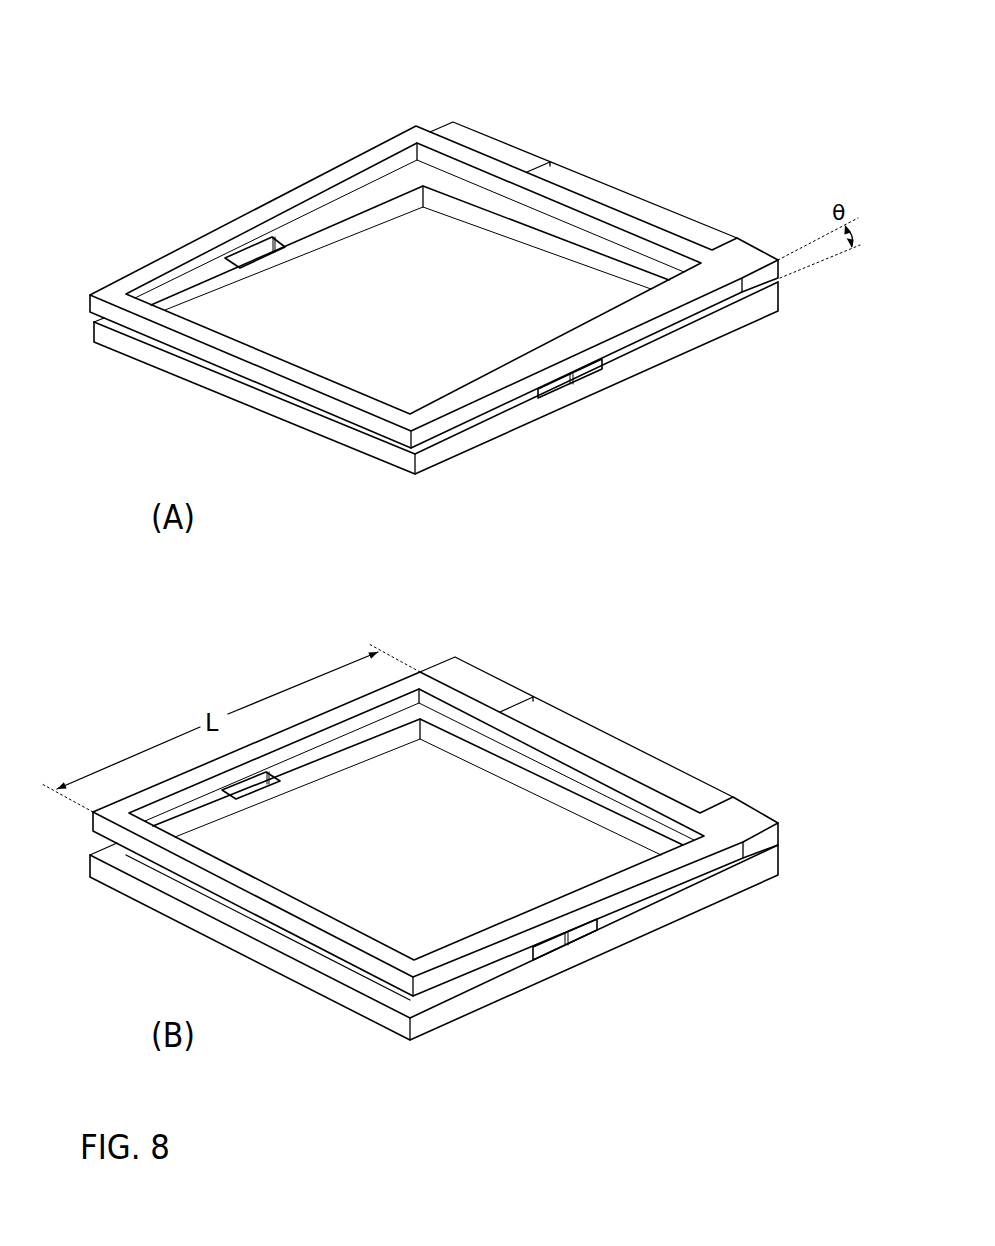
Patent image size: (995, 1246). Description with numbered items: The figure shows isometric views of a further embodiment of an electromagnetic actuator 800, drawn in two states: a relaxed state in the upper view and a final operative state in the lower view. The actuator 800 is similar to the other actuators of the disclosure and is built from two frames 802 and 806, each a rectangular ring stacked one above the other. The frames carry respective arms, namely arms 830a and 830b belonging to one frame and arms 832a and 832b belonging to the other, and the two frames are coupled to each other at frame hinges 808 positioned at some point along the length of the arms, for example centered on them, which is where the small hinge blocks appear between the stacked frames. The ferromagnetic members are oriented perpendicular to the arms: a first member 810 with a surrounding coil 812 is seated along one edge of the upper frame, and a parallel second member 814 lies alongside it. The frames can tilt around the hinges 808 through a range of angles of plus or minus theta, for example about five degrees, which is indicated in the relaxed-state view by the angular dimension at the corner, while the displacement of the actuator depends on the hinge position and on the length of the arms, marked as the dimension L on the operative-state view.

The EM actuator 800 is at (421, 29).
The frame 802 is at (430, 1020).
The frame 806 is at (633, 898).
The frame hinge 808 is at (280, 782).
The first member 810 is at (503, 696).
The coil 812 is at (633, 766).
The second member 814 is at (588, 205).
The arm 830a is at (217, 299).
The arm 830b is at (537, 425).
The arm 832a is at (283, 199).
The arm 832b is at (652, 322).